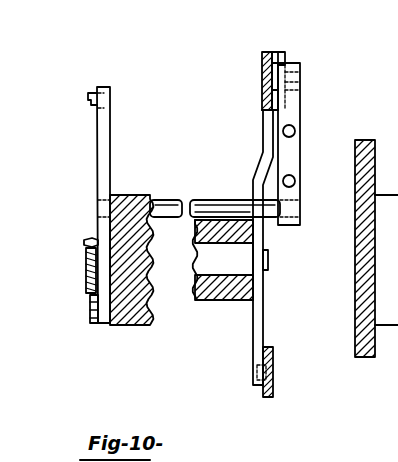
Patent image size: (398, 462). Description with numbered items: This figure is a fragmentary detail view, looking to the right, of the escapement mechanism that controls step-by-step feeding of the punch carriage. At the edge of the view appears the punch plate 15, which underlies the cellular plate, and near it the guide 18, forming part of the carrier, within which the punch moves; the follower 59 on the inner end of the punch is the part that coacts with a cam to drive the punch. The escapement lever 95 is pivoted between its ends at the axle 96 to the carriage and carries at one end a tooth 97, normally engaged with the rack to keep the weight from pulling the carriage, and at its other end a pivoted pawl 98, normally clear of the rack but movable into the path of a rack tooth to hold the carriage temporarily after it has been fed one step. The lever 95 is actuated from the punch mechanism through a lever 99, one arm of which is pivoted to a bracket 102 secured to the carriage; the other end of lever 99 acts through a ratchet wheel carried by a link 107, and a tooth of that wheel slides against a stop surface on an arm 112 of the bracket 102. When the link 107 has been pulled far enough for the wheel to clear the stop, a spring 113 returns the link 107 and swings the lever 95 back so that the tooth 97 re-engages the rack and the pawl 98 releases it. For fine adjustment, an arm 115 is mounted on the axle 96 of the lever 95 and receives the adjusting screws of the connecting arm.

The punch plate 15 is at (362, 236).
The guide 18 is at (148, 318).
The follower 59 is at (228, 290).
The escapement lever 95 is at (110, 158).
The pivot (axle) 96 is at (205, 202).
The tooth 97 is at (88, 97).
The pawl 98 is at (90, 318).
The lever 99 is at (266, 300).
The bracket 102 is at (274, 388).
The link 107 is at (283, 52).
The arm 112 is at (262, 53).
The spring 113 is at (86, 262).
The arm 115 is at (298, 158).